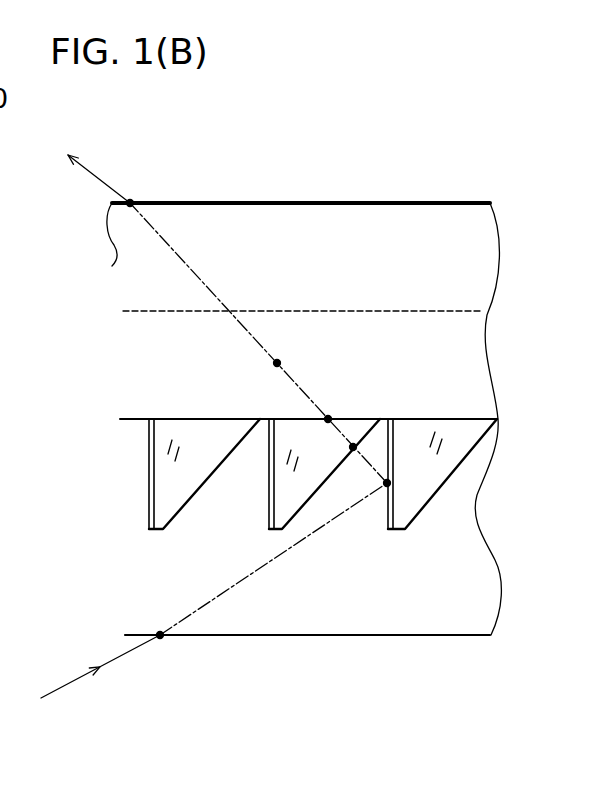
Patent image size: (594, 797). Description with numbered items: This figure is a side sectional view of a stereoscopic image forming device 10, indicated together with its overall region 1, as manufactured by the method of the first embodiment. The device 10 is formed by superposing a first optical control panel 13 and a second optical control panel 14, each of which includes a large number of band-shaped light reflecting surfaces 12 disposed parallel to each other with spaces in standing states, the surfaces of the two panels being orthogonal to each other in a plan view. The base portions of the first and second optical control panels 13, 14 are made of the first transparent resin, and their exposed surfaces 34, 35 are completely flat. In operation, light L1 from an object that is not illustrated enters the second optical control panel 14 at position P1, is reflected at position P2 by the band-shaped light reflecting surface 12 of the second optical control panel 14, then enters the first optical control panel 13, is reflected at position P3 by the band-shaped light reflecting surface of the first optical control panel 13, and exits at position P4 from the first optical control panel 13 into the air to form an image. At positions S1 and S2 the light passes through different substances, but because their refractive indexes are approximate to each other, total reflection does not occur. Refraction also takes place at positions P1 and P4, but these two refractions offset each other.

The display device 1 is at (494, 290).
The stereoscopic image forming device 10 is at (477, 148).
The band-shaped light reflecting surface 12 is at (267, 503).
The first optical control panel 13 is at (0, 297).
The second optical control panel 14 is at (0, 530).
The exposed surface 34 is at (361, 200).
The exposed surface 35 is at (420, 638).
The light L1 is at (193, 436).
The entry position P1 is at (161, 640).
The reflection position P2 is at (387, 483).
The reflection position P3 is at (278, 360).
The exit position P4 is at (131, 200).
The substance boundary S1 is at (354, 444).
The substance boundary S2 is at (328, 416).